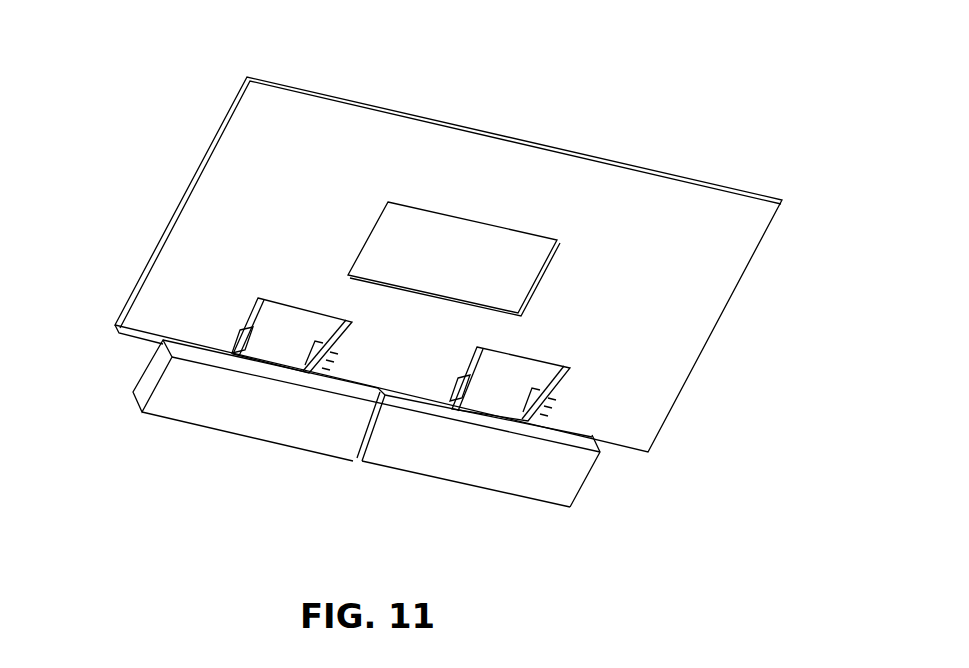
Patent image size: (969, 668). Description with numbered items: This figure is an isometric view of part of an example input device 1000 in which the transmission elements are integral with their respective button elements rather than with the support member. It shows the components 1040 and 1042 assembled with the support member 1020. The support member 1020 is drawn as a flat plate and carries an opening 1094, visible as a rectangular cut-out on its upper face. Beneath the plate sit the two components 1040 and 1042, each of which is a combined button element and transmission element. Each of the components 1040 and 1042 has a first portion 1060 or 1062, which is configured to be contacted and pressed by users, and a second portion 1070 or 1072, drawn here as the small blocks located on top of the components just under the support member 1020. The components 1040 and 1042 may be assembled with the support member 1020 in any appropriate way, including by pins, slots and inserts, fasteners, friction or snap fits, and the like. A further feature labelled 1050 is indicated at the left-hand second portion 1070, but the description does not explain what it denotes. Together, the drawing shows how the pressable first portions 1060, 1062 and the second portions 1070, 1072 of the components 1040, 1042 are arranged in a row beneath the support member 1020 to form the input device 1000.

The input device 1000 is at (213, 83).
The support member 1020 is at (233, 195).
The opening 1094 is at (471, 252).
The component 1040 is at (198, 397).
The component 1042 is at (417, 443).
The first portion 1060 is at (268, 410).
The first portion 1062 is at (470, 465).
The second portion 1070 is at (290, 342).
The second portion 1072 is at (502, 387).
The connector tab 1050 is at (237, 342).